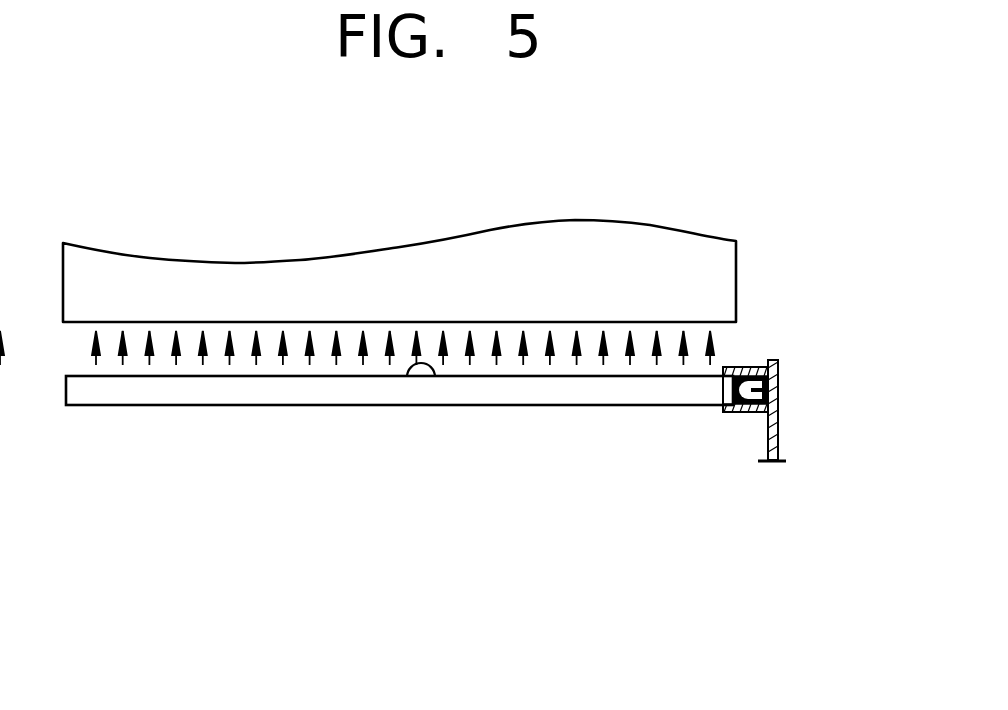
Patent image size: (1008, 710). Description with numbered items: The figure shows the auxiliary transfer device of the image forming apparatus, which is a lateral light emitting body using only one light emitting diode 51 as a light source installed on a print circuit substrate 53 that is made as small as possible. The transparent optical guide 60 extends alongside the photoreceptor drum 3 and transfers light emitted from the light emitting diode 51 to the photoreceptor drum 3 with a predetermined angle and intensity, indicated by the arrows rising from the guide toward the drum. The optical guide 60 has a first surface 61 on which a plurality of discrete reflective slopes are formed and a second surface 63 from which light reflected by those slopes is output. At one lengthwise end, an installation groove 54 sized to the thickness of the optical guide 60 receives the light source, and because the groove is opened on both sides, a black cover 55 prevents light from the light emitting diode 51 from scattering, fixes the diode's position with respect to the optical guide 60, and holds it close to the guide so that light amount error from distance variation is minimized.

The photoreceptor drum 3 is at (727, 290).
The light emitting diode 51 is at (778, 388).
The print circuit substrate 53 is at (779, 437).
The installation groove 54 is at (725, 413).
The cover 55 is at (748, 413).
The optical guide 60 is at (474, 448).
The first surface 61 is at (548, 407).
The second surface 63 is at (406, 378).